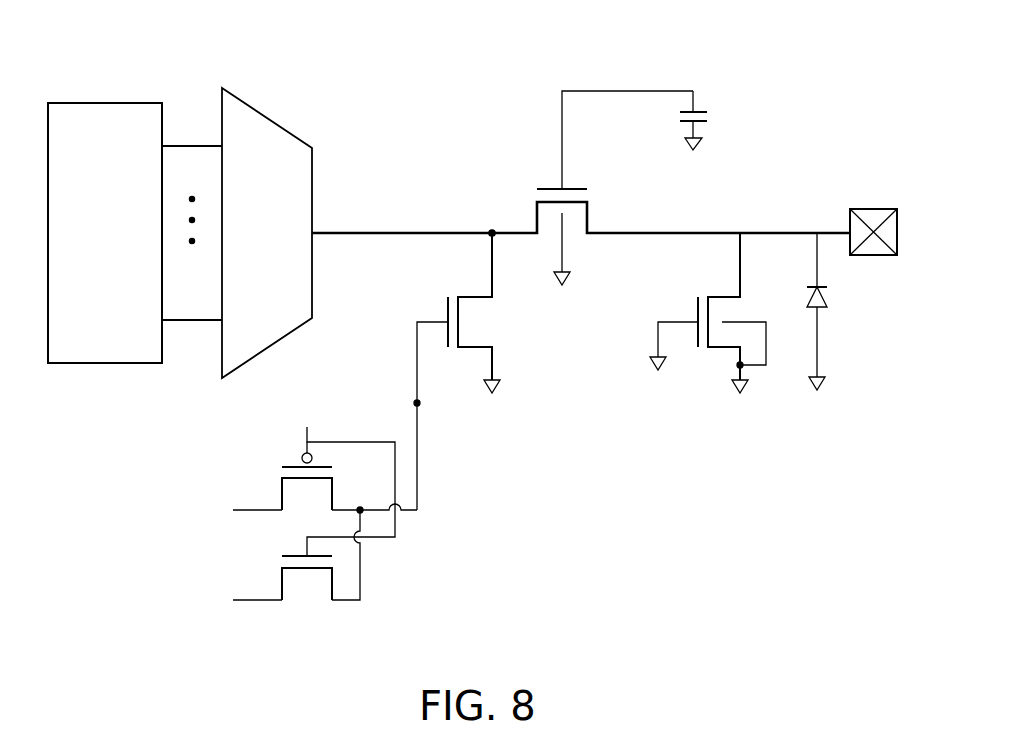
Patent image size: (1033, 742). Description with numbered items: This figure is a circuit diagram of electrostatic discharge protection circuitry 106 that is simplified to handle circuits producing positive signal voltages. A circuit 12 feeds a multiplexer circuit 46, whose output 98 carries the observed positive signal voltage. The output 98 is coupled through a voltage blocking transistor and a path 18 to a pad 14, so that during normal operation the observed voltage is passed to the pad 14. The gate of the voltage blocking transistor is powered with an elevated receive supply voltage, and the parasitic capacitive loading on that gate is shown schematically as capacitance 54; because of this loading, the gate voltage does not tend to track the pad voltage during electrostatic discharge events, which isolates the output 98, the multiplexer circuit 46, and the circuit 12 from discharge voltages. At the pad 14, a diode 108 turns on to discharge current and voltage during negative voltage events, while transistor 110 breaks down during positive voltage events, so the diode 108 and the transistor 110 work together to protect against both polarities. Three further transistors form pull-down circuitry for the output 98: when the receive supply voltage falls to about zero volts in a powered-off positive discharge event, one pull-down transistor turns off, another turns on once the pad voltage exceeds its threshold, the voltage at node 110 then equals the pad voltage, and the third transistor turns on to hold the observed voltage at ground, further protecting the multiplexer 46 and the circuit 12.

The circuit 12 is at (102, 102).
The multiplexer circuit 46 is at (263, 112).
The output 98 is at (357, 237).
The path 18 is at (512, 232).
The capacitance 54 is at (721, 108).
The electrostatic discharge protection circuitry 106 is at (615, 471).
The transistor 110 is at (417, 403).
The diode 108 is at (838, 300).
The pad 14 is at (897, 233).